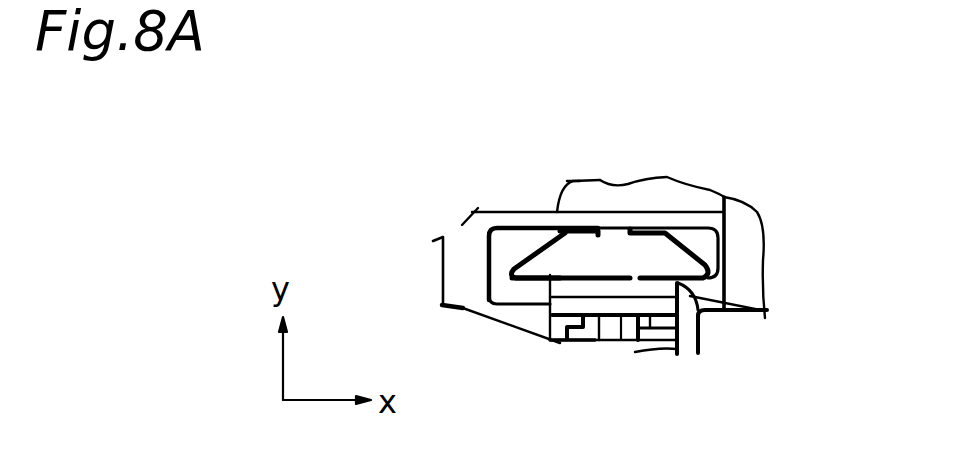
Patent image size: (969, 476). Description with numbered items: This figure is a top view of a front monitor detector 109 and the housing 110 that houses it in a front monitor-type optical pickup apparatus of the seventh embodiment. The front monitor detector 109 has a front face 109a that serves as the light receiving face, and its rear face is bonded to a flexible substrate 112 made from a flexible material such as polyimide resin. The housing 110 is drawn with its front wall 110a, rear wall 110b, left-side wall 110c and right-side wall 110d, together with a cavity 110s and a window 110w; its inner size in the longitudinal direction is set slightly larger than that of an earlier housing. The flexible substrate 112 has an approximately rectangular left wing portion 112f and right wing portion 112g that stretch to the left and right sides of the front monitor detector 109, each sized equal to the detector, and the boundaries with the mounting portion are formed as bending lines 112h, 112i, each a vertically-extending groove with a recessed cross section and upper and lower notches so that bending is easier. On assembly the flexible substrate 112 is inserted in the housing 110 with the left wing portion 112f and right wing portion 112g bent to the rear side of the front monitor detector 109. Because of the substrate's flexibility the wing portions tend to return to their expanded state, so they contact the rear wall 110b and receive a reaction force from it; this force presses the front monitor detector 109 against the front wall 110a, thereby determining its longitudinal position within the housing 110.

The front monitor detector 109 is at (612, 240).
The front face 109a is at (620, 336).
The housing 110 is at (458, 224).
The front wall 110a is at (560, 343).
The rear wall 110b is at (600, 229).
The left-side wall 110c is at (470, 286).
The right-side wall 110d is at (755, 284).
The cavity 110s is at (550, 313).
The window 110w is at (603, 338).
The flexible substrate 112 is at (700, 309).
The left wing portion 112f is at (525, 257).
The right wing portion 112g is at (693, 253).
The bending line 112h is at (509, 278).
The bending line 112i is at (722, 310).